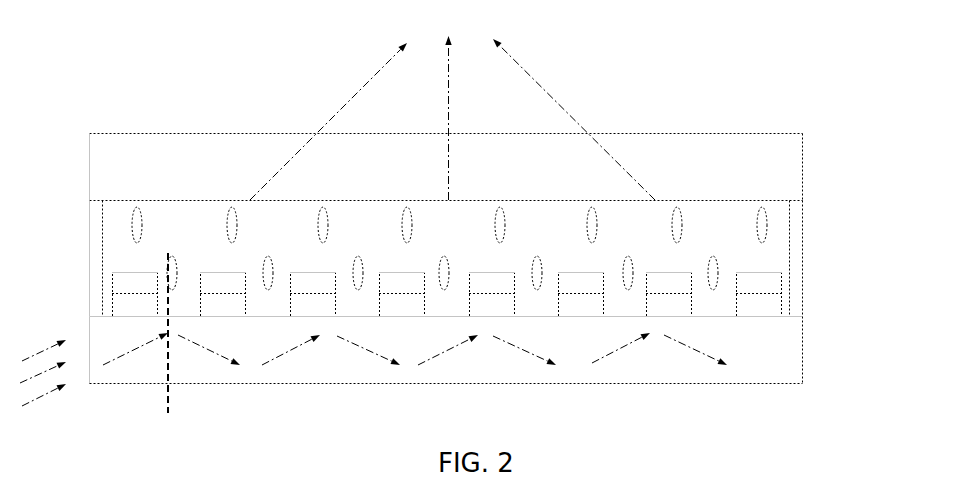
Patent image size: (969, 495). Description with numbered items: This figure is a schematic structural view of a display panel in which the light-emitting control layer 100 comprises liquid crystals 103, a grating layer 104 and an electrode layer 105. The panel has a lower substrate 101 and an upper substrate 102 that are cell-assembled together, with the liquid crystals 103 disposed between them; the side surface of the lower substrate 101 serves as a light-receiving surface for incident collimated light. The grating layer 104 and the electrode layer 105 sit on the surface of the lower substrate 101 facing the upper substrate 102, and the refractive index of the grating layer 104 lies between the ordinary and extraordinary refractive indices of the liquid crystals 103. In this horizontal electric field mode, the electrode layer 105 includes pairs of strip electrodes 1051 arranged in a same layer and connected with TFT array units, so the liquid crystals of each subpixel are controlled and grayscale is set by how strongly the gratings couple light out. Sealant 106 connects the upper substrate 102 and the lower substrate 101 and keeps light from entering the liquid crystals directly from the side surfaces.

The light-emitting control layer 100 is at (876, 194).
The lower substrate 101 is at (802, 368).
The upper substrate 102 is at (805, 170).
The liquid crystals 103 is at (767, 226).
The grating layer 104 is at (781, 301).
The electrode layer 105 is at (781, 284).
The strip electrodes 1051 is at (116, 279).
The sealant 106 is at (89, 284).